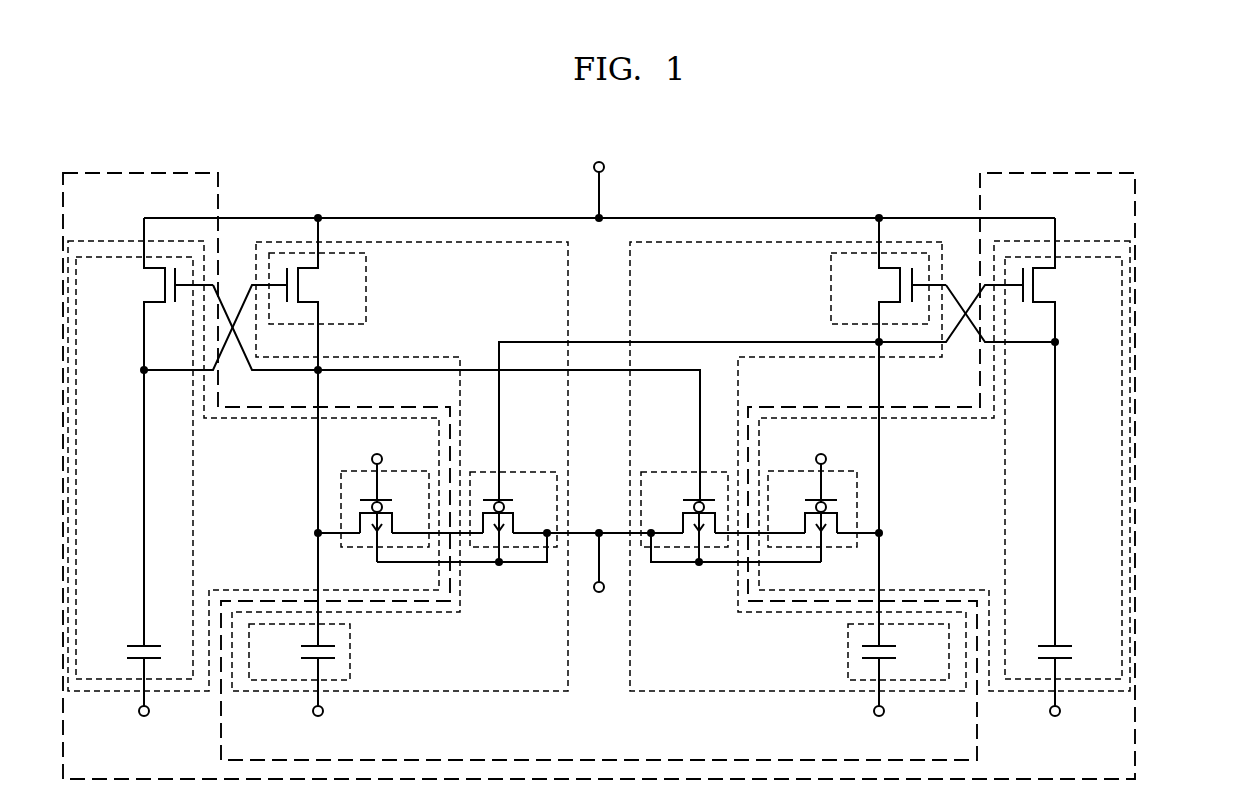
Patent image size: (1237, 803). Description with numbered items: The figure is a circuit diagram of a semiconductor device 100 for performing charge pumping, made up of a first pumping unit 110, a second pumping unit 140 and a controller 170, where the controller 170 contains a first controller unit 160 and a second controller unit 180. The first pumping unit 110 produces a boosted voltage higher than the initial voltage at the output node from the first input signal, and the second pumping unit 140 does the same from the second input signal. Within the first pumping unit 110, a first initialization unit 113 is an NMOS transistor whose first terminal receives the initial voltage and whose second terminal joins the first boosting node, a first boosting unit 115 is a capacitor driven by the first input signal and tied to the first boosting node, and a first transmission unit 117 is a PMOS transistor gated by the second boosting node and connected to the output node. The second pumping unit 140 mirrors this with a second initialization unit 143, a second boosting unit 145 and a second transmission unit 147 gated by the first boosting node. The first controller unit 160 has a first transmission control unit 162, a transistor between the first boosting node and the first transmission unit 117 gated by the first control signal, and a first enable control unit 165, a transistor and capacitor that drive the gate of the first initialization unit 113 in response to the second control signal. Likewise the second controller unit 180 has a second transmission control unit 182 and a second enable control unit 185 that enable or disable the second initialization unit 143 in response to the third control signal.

The semiconductor device 100 is at (902, 173).
The first pumping unit 110 is at (470, 690).
The first initialization unit 113 is at (366, 289).
The first boosting unit 115 is at (350, 654).
The first transmission unit 117 is at (523, 470).
The second pumping unit 140 is at (735, 690).
The second initialization unit 143 is at (831, 290).
The second boosting unit 145 is at (848, 655).
The second transmission unit 147 is at (670, 470).
The first controller unit 160 is at (110, 241).
The first transmission control unit 162 is at (341, 492).
The first enable control unit 165 is at (193, 457).
The controller 170 is at (1137, 477).
The second controller unit 180 is at (1088, 241).
The second transmission control unit 182 is at (857, 491).
The second enable control unit 185 is at (1005, 458).